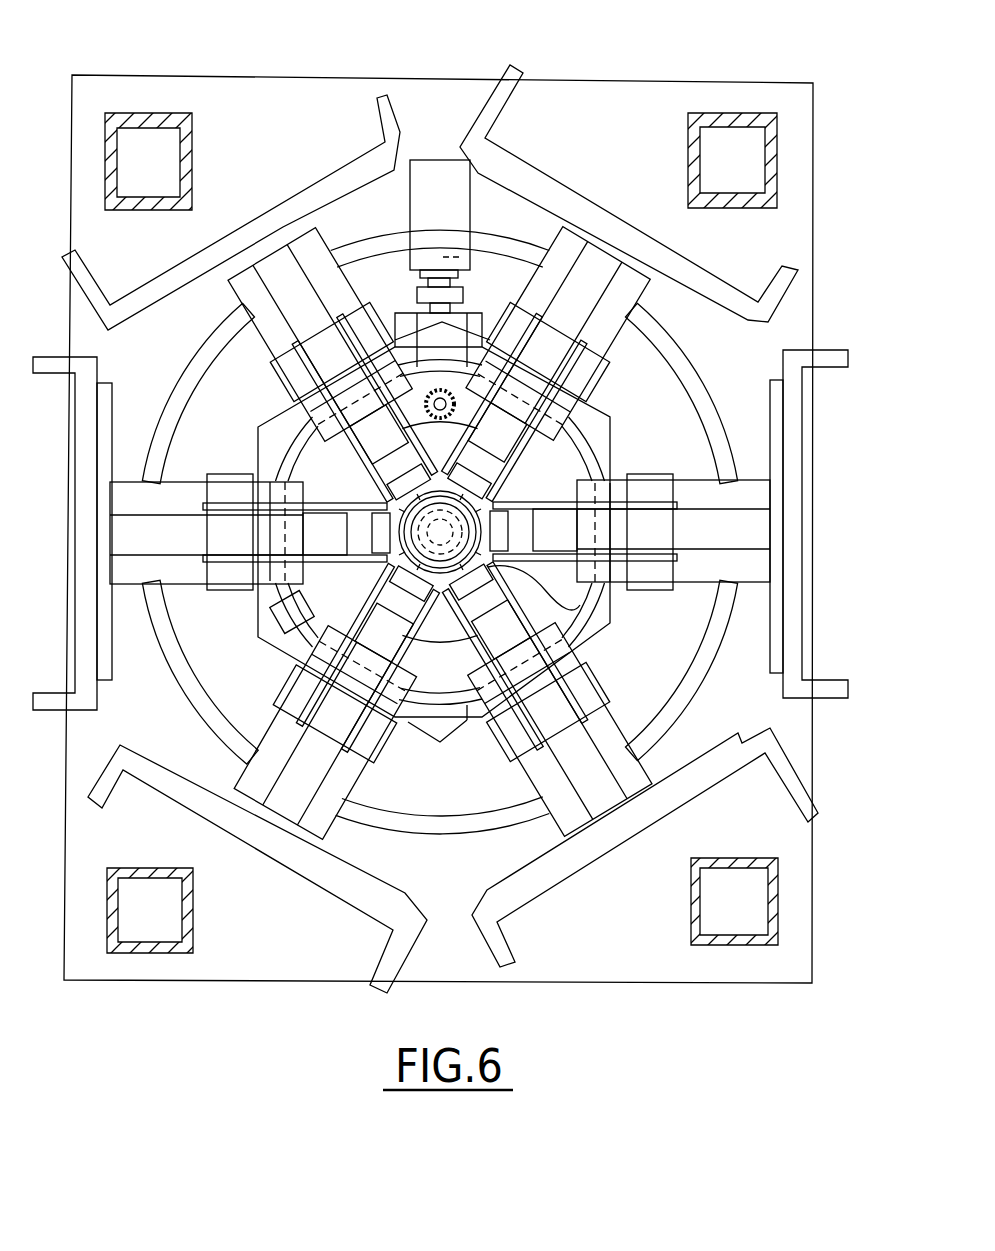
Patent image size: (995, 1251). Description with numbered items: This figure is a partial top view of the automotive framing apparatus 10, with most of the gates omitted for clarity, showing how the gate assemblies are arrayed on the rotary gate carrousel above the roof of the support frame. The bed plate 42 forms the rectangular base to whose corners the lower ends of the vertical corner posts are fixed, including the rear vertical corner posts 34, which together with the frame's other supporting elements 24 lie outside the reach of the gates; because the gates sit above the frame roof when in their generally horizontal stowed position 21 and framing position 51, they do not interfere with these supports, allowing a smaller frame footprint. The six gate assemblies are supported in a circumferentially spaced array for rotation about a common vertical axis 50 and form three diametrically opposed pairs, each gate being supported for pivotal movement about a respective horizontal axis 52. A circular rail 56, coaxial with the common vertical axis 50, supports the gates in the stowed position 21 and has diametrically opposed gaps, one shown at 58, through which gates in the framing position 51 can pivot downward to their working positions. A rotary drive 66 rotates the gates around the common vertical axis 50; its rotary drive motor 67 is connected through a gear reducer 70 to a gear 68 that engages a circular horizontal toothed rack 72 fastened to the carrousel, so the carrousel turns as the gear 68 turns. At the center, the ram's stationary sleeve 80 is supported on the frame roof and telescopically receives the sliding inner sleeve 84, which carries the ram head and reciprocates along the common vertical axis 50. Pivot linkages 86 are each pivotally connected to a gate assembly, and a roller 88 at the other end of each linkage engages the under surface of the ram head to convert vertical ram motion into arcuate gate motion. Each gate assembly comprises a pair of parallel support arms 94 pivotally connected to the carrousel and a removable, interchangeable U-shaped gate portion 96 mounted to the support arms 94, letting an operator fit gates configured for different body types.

The automotive framing apparatus 10 is at (538, 107).
The stowed position 21 is at (249, 72).
The supporting elements 24 is at (129, 113).
The rear vertical corner posts 34 is at (454, 508).
The bed plate 42 is at (466, 873).
The common vertical axis 50 is at (444, 528).
The framing position 51 is at (29, 394).
The horizontal axes 52 is at (571, 390).
The circular rail 56 is at (676, 352).
The gap 58 is at (164, 477).
The rotary drive 66 is at (423, 183).
The rotary drive motor 67 is at (443, 160).
The gear 68 is at (442, 388).
The gear reducer 70 is at (400, 308).
The circular horizontal toothed rack 72 is at (572, 413).
The stationary sleeve 80 is at (528, 596).
The sliding inner sleeve 84 is at (300, 606).
The pivot linkages 86 is at (354, 350).
The roller 88 is at (466, 444).
The support arms 94 is at (298, 242).
The U-shaped gate portion 96 is at (510, 66).